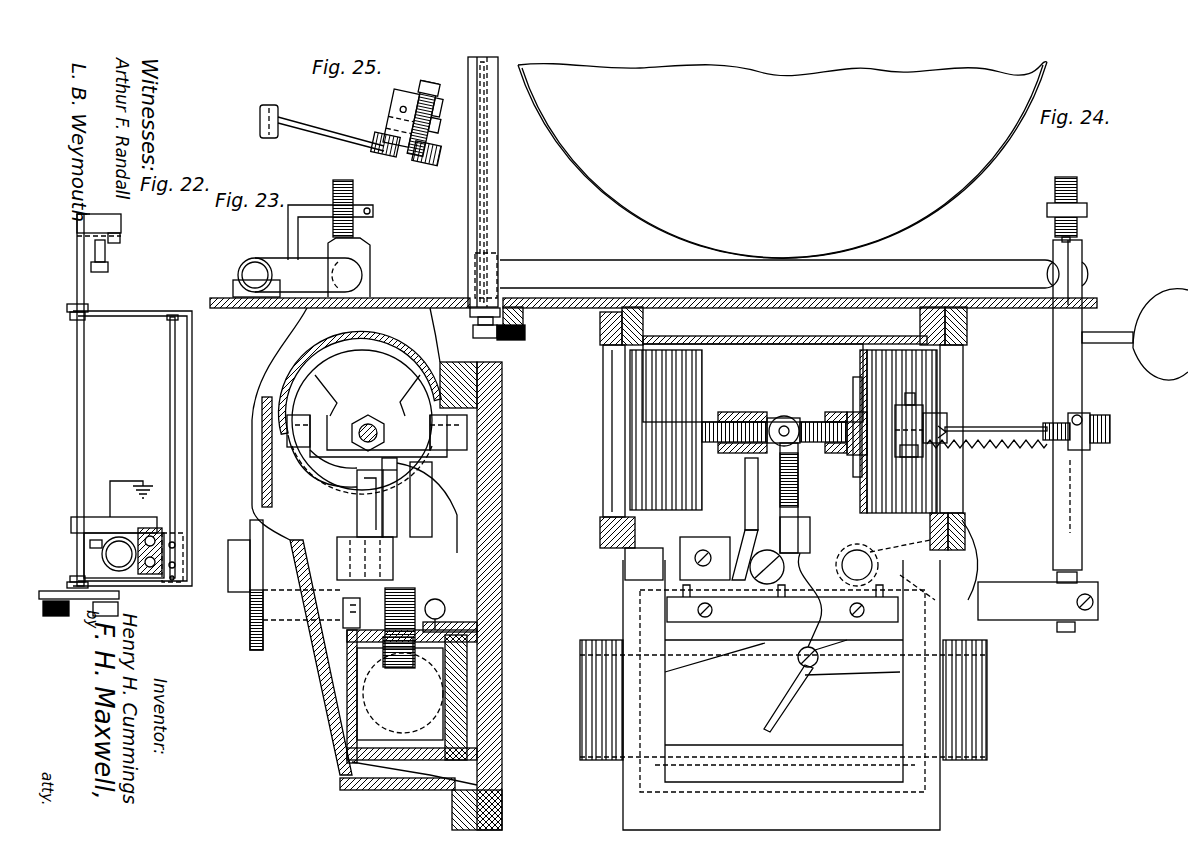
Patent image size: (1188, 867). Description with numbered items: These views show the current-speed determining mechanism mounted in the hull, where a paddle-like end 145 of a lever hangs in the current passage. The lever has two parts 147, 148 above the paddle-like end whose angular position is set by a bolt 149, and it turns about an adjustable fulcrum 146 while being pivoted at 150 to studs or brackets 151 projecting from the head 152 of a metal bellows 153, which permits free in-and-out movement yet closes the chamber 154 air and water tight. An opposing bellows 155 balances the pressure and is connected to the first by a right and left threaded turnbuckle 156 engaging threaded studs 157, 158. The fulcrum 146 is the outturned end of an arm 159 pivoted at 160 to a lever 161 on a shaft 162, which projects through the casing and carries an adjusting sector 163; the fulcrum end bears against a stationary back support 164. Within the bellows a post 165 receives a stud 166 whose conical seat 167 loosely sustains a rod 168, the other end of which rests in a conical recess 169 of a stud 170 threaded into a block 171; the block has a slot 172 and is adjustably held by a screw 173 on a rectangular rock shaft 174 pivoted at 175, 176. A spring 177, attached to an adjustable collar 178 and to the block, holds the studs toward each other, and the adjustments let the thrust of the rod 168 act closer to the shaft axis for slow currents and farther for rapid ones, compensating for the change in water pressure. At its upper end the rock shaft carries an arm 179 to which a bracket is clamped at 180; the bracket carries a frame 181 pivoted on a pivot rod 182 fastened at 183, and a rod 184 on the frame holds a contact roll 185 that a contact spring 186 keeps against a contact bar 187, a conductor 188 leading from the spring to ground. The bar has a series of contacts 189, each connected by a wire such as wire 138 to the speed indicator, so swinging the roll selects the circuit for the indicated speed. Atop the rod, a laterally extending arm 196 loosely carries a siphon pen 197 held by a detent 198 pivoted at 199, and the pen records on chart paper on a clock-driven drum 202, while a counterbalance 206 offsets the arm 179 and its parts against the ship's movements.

In FIG. 24, the wire 138 is at (527, 335).
In FIG. 23, the paddle-like end 145 is at (400, 688).
In FIG. 24, the paddle-like end 145 is at (790, 702).
In FIG. 23, the adjustable fulcrum 146 is at (447, 455).
In FIG. 24, the adjustable fulcrum 146 is at (798, 468).
In FIG. 23, the lever part 147 is at (397, 515).
In FIG. 24, the lever part 147 is at (798, 490).
In FIG. 23, the lever part 148 is at (417, 590).
In FIG. 24, the lever part 148 is at (805, 585).
In FIG. 24, the bolt 149 is at (798, 658).
In FIG. 24, the pivot 150 is at (787, 417).
In FIG. 23, the studs or brackets 151 is at (323, 416).
In FIG. 24, the studs or brackets 151 is at (851, 420).
In FIG. 24, the head 152 is at (882, 370).
In FIG. 23, the metal bellows 153 is at (359, 410).
In FIG. 24, the metal bellows 153 is at (925, 368).
In FIG. 24, the chamber 154 is at (741, 360).
In FIG. 24, the bellows 155 is at (675, 352).
In FIG. 23, the right and left threaded nut or turnbuckle 156 is at (376, 412).
In FIG. 24, the right and left threaded nut or turnbuckle 156 is at (770, 418).
In FIG. 24, the threaded stud 157 is at (728, 412).
In FIG. 24, the threaded stud 158 is at (845, 456).
In FIG. 23, the arm 159 is at (372, 518).
In FIG. 24, the arm 159 is at (765, 550).
In FIG. 23, the pivot 160 is at (367, 605).
In FIG. 24, the pivot 160 is at (717, 569).
In FIG. 24, the lever 161 is at (855, 550).
In FIG. 24, the shaft 162 is at (876, 548).
In FIG. 23, the adjusting sector 163 is at (262, 648).
In FIG. 24, the adjusting sector 163 is at (970, 535).
In FIG. 23, the stationary back support 164 is at (432, 537).
In FIG. 24, the stationary back support 164 is at (750, 460).
In FIG. 24, the post 165 is at (932, 415).
In FIG. 25, the stud 166 is at (272, 106).
In FIG. 24, the stud 166 is at (920, 420).
In FIG. 24, the conical seat 167 is at (948, 430).
In FIG. 25, the rod 168 is at (336, 124).
In FIG. 24, the rod 168 is at (995, 440).
In FIG. 25, the conical recess 169 is at (388, 162).
In FIG. 24, the conical recess 169 is at (1045, 424).
In FIG. 25, the stud 170 is at (432, 162).
In FIG. 24, the stud 170 is at (1075, 412).
In FIG. 25, the block 171 is at (438, 92).
In FIG. 24, the block 171 is at (1095, 443).
In FIG. 25, the slot 172 is at (430, 78).
In FIG. 25, the screw 173 is at (444, 108).
In FIG. 25, the rock shaft 174 is at (392, 101).
In FIG. 23, the rock shaft 174 is at (371, 250).
In FIG. 24, the rock shaft 174 is at (1082, 505).
In FIG. 24, the pivot 175 is at (1077, 582).
In FIG. 23, the pivot 176 is at (333, 186).
In FIG. 24, the pivot 176 is at (1087, 222).
In FIG. 24, the spring 177 is at (1024, 452).
In FIG. 24, the adjustable collar 178 is at (912, 455).
In FIG. 23, the arm 179 is at (278, 262).
In FIG. 24, the arm 179 is at (798, 284).
In FIG. 22, the clamp 180 is at (90, 548).
In FIG. 24, the clamp 180 is at (501, 258).
In FIG. 22, the frame 181 is at (192, 362).
In FIG. 24, the frame 181 is at (500, 195).
In FIG. 22, the pivot rod 182 is at (170, 388).
In FIG. 24, the pivot rod 182 is at (488, 165).
In FIG. 22, the fastening 183 is at (176, 530).
In FIG. 22, the rod 184 is at (84, 412).
In FIG. 22, the contact roll or wheel 185 is at (119, 598).
In FIG. 22, the contact spring 186 is at (76, 518).
In FIG. 24, the contact bar 187 is at (525, 318).
In FIG. 22, the conductor 188 is at (131, 481).
In FIG. 24, the contacts 189 is at (500, 340).
In FIG. 22, the laterally extending arm 196 is at (120, 240).
In FIG. 22, the siphon pen 197 is at (108, 268).
In FIG. 22, the detent 198 is at (121, 222).
In FIG. 22, the pivot 199 is at (80, 212).
In FIG. 24, the drum 202 is at (950, 192).
In FIG. 24, the counterbalance 206 is at (1165, 305).